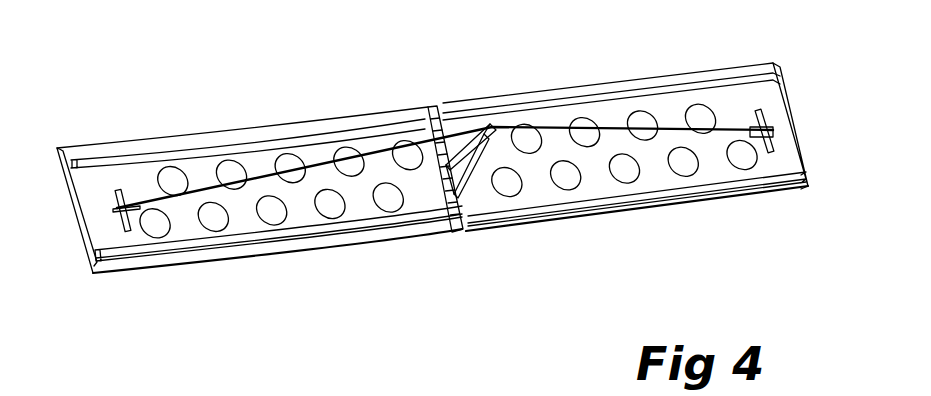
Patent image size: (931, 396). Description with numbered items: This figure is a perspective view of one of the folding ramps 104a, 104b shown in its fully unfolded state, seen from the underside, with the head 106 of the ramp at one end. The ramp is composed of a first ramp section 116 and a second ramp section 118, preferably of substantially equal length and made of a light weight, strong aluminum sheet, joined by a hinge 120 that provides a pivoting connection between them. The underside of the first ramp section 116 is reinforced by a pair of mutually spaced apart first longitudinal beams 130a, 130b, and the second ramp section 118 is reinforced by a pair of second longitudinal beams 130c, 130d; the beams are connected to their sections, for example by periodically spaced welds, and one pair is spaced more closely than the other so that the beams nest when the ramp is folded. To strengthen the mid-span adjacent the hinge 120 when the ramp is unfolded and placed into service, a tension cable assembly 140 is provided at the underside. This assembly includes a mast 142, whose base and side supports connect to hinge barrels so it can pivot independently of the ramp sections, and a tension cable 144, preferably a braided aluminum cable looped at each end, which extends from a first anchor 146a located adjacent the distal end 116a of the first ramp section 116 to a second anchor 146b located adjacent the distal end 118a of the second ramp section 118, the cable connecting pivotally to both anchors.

The folding ramp 104a is at (259, 237).
The folding ramp 104b is at (618, 204).
The head 106 is at (424, 203).
The first ramp section 116 is at (259, 217).
The distal end of the first ramp section 116a is at (77, 210).
The second ramp section 118 is at (625, 179).
The distal end of the second ramp section 118a is at (790, 126).
The hinge 120 is at (454, 177).
The first longitudinal beam 130a is at (267, 247).
The first longitudinal beam 130b is at (248, 143).
The second longitudinal beam 130c is at (637, 201).
The second longitudinal beam 130d is at (611, 96).
The tension cable assembly 140 is at (473, 112).
The mast 142 is at (447, 168).
The tension cable 144 is at (420, 174).
The first anchor 146a is at (110, 196).
The second anchor 146b is at (775, 188).